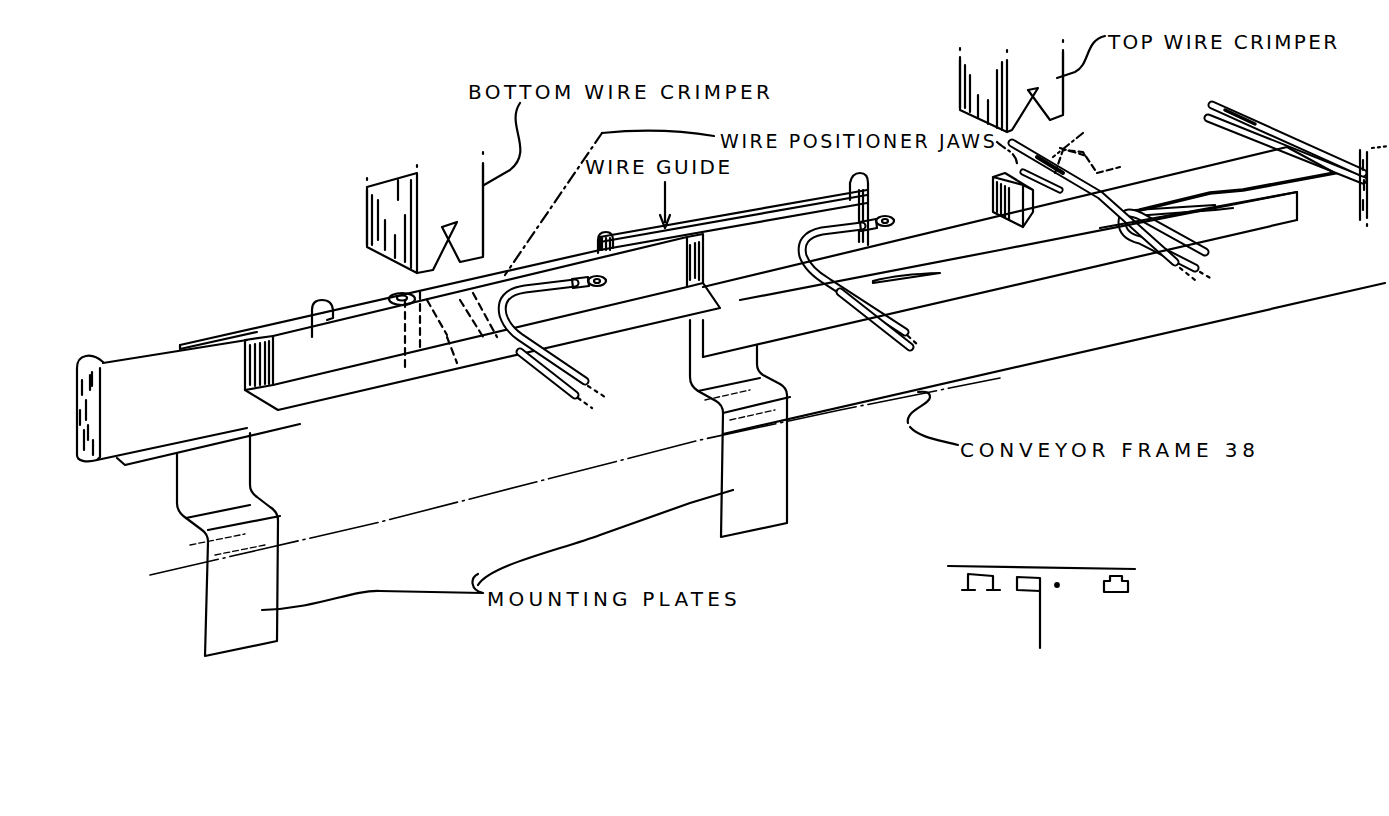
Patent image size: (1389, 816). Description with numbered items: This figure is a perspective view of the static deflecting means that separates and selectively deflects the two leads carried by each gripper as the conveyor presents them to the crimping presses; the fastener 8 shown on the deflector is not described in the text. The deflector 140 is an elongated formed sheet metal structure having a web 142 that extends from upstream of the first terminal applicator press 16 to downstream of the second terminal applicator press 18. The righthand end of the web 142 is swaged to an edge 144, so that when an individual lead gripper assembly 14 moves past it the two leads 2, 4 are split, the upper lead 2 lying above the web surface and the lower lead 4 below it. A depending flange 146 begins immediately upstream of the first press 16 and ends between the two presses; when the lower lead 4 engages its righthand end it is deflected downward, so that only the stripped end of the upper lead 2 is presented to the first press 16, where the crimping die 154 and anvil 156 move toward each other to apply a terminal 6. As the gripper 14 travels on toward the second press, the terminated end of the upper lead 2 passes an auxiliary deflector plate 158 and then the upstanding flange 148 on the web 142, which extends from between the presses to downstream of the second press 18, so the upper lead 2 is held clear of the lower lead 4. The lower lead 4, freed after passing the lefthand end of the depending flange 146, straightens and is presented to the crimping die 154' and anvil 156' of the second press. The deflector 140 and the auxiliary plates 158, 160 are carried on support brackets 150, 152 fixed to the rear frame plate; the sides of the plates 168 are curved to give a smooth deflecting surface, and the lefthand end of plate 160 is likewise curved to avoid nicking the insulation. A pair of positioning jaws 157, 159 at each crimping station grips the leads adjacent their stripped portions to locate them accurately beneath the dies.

The upper lead 2 is at (560, 353).
The lower lead 4 is at (553, 368).
The terminal 6 is at (605, 287).
The washer 8 is at (398, 293).
The lead gripper assembly 14 is at (1360, 150).
The first terminal applicator press 16 is at (1082, 97).
The second terminal applicator press 18 is at (350, 245).
The deflector 140 is at (994, 246).
The web 142 is at (957, 244).
The swaged edge 144 is at (1330, 182).
The depending flange 146 is at (1093, 255).
The upstanding flange 148 is at (360, 345).
The deflector support bracket 150 is at (724, 386).
The deflector support bracket 152 is at (262, 530).
The crimping die 154 is at (969, 86).
The crimping die 154' is at (380, 212).
The anvil 156 is at (974, 192).
The anvil 156' is at (461, 365).
The positioning jaw 157 is at (1083, 126).
The auxiliary deflector plate 158 is at (748, 234).
The positioning jaw 159 is at (1122, 164).
The auxiliary deflector plate 160 is at (198, 372).
The curved plate sides 168 is at (320, 308).